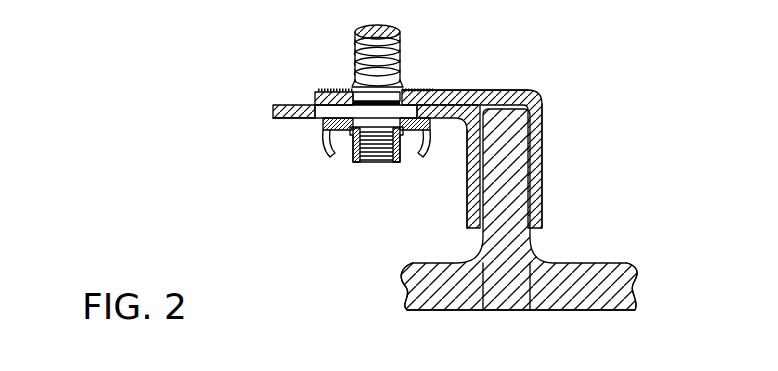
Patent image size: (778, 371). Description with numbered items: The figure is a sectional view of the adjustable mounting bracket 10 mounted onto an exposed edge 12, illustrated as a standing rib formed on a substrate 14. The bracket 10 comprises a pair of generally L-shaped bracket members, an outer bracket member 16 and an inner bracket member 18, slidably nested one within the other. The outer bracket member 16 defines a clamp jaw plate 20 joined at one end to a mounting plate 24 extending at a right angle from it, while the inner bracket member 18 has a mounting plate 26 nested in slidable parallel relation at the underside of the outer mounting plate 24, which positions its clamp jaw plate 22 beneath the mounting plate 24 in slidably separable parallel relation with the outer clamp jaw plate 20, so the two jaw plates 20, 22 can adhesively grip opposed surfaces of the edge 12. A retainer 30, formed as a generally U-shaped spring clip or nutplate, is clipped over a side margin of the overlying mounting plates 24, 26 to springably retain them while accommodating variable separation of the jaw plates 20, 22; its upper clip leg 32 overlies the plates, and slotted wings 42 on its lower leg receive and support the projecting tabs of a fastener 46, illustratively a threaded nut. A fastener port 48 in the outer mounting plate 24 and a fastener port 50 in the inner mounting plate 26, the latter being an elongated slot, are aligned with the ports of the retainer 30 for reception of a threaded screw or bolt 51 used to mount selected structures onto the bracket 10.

The adjustable mounting bracket 10 is at (426, 172).
The exposed edge 12 is at (518, 198).
The substrate 14 is at (578, 302).
The outer bracket member 16 is at (528, 90).
The inner bracket member 18 is at (270, 103).
The clamp jaw plate 20 is at (547, 170).
The clamp jaw plate 22 is at (470, 183).
The mounting plate 24 is at (477, 102).
The mounting plate 26 is at (282, 117).
The retainer 30 is at (425, 88).
The upper clip leg 32 is at (330, 88).
The slotted wings 42 is at (332, 150).
The fastener 46 is at (365, 162).
The fastener port 48 is at (395, 80).
The fastener port 50 is at (318, 110).
The threaded screw or bolt 51 is at (355, 40).